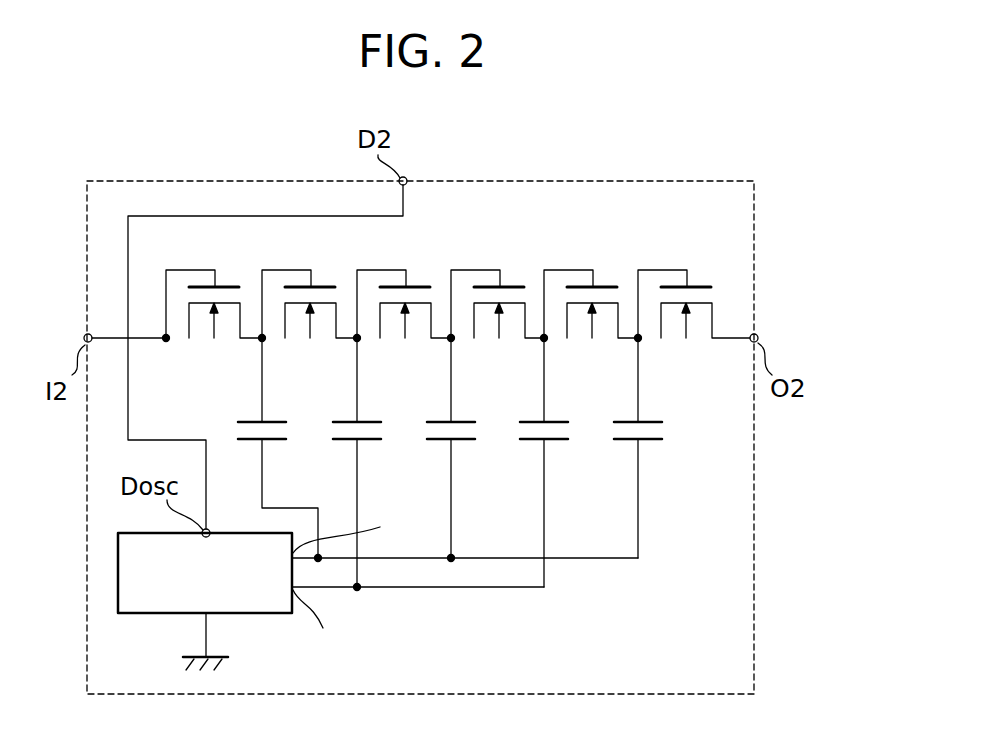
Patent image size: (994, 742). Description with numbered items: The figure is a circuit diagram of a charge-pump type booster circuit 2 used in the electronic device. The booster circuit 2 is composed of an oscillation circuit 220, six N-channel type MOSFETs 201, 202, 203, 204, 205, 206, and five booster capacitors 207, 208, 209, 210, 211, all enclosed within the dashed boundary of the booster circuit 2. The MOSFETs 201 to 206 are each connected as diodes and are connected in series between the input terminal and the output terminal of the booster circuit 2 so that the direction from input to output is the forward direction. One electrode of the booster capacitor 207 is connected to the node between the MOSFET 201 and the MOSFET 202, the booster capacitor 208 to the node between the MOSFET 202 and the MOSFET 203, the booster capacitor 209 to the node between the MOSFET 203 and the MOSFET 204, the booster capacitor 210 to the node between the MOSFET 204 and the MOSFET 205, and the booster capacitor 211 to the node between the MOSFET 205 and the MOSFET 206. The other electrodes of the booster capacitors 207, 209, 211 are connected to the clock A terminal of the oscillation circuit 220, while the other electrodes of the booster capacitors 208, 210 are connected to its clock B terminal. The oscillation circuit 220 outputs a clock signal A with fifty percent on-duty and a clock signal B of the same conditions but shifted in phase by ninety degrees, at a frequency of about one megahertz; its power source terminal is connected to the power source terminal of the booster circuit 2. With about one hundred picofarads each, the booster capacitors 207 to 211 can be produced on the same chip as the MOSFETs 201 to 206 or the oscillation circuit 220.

The booster circuit 2 is at (537, 180).
The N-channel type MOSFET 201 is at (227, 280).
The N-channel type MOSFET 202 is at (323, 280).
The N-channel type MOSFET 203 is at (418, 280).
The N-channel type MOSFET 204 is at (510, 280).
The N-channel type MOSFET 205 is at (603, 280).
The N-channel type MOSFET 206 is at (697, 280).
The booster capacitor 207 is at (242, 420).
The booster capacitor 208 is at (337, 420).
The booster capacitor 209 is at (431, 420).
The booster capacitor 210 is at (524, 420).
The booster capacitor 211 is at (617, 420).
The oscillation circuit 220 is at (257, 614).